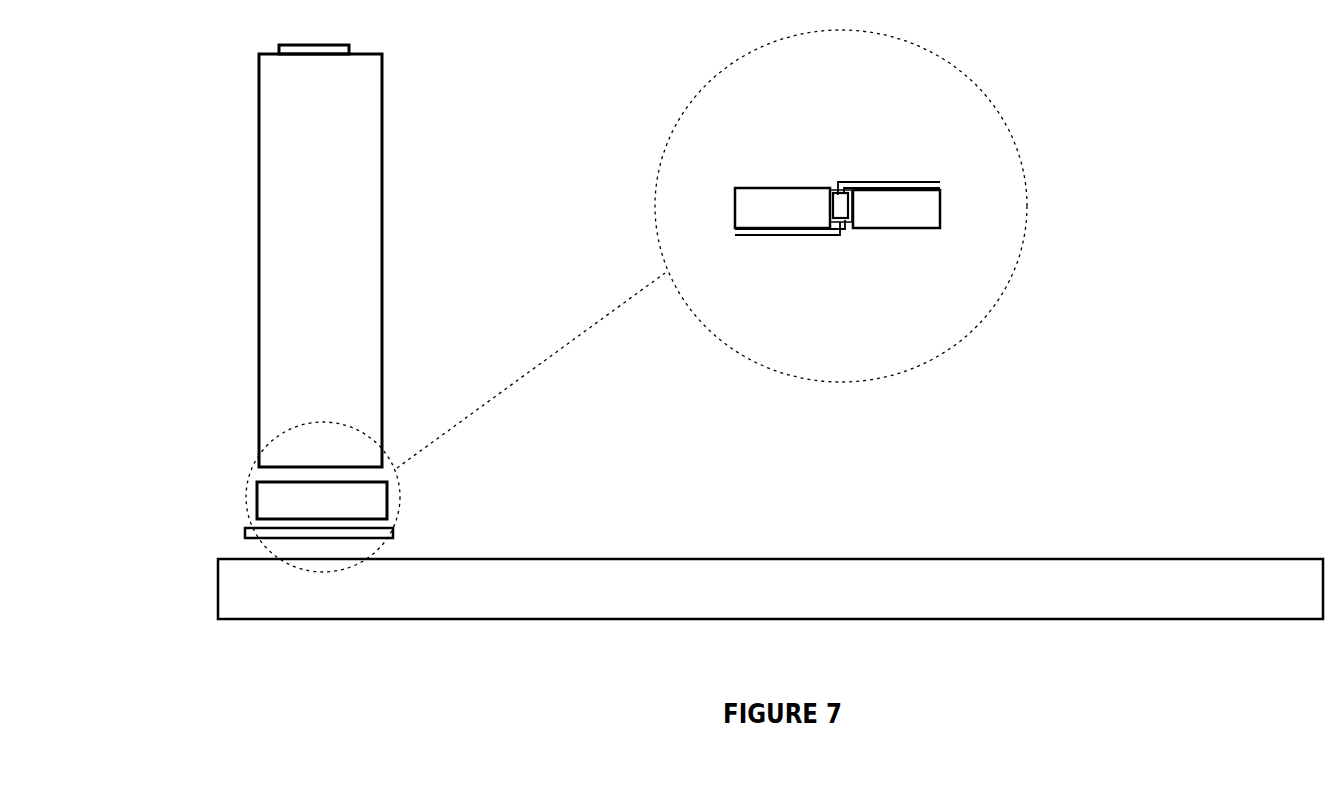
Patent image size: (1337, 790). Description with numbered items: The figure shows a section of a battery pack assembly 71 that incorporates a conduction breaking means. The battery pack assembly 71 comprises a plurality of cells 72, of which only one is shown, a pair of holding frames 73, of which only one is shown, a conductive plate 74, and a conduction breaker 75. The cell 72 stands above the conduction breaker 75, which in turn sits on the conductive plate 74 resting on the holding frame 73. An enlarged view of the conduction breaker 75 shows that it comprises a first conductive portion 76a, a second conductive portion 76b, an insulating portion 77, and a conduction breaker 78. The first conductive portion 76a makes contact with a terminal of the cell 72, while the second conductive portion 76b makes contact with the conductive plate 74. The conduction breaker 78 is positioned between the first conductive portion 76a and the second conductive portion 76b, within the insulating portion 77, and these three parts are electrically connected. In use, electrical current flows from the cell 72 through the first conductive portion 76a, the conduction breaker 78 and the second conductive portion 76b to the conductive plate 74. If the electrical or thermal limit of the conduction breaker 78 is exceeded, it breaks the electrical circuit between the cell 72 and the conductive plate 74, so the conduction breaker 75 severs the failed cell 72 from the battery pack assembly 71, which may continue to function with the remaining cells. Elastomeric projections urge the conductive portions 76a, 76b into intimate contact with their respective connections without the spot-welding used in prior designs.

The battery pack assembly 71 is at (432, 310).
The cell 72 is at (288, 335).
The holding frame 73 is at (267, 587).
The conductive plate 74 is at (245, 533).
The conduction breaker 75 is at (268, 498).
The first conductive portion 76a is at (880, 180).
The second conductive portion 76b is at (797, 238).
The insulating portion 77 is at (913, 210).
The conduction breaker 78 is at (847, 208).